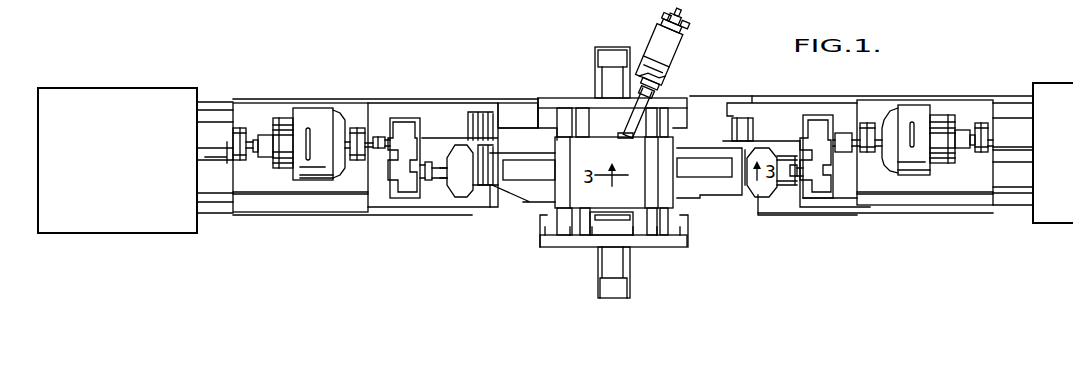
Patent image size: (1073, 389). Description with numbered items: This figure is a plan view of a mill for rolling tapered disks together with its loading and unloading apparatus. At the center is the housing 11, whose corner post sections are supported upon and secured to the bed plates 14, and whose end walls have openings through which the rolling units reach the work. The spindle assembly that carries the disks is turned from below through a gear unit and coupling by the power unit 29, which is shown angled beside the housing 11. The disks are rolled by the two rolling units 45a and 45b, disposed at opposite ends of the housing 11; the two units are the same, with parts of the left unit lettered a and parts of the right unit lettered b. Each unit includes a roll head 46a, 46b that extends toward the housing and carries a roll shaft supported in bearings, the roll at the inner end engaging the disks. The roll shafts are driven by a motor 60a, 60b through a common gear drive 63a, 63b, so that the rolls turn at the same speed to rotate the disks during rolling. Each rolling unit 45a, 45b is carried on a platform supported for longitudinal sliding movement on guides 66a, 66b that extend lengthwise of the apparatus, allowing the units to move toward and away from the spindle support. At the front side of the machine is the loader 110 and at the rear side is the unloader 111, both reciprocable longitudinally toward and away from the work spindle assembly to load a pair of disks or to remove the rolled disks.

The housing 11 is at (692, 233).
The bed plates 14 is at (672, 107).
The power unit 29 is at (677, 53).
The rolling unit 45a is at (451, 234).
The rolling unit 45b is at (764, 240).
The roll head 46a is at (523, 186).
The roll head 46b is at (725, 188).
The motor 60a is at (317, 113).
The motor 60b is at (912, 115).
The common gear drive 63a is at (403, 193).
The common gear drive 63b is at (822, 192).
The guides 66a is at (210, 118).
The guides 66b is at (1010, 113).
The loader 110 is at (592, 289).
The unloader 111 is at (589, 70).